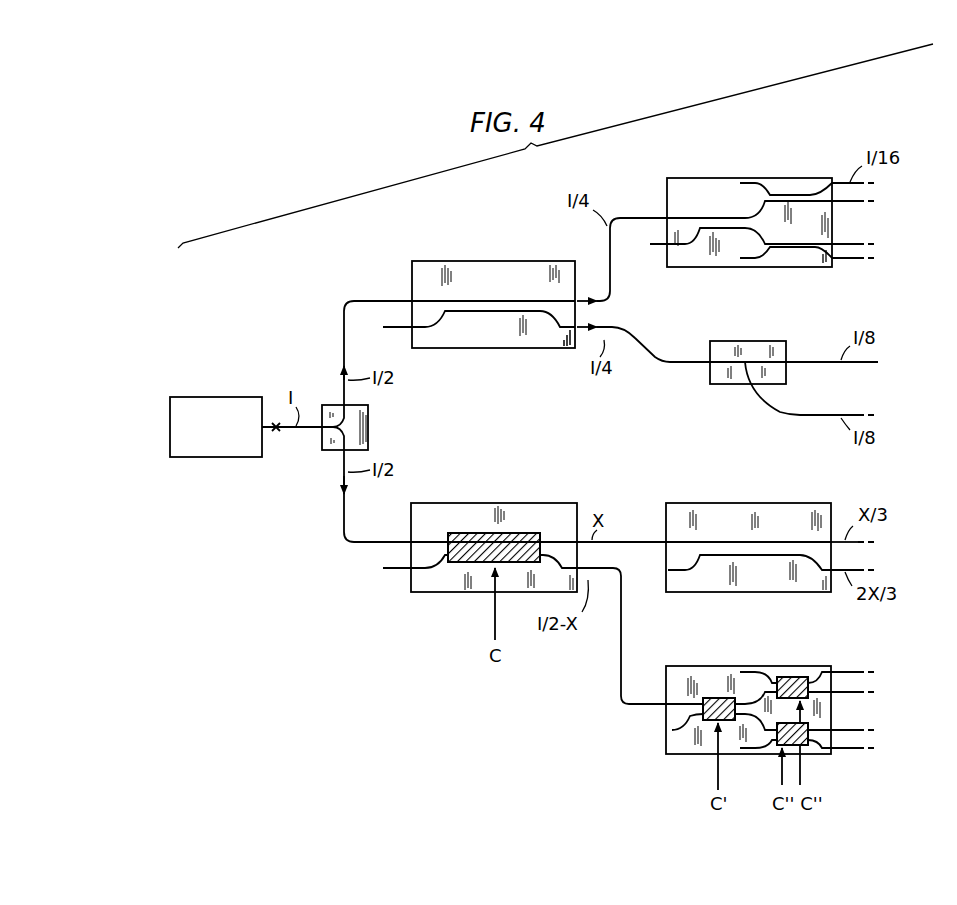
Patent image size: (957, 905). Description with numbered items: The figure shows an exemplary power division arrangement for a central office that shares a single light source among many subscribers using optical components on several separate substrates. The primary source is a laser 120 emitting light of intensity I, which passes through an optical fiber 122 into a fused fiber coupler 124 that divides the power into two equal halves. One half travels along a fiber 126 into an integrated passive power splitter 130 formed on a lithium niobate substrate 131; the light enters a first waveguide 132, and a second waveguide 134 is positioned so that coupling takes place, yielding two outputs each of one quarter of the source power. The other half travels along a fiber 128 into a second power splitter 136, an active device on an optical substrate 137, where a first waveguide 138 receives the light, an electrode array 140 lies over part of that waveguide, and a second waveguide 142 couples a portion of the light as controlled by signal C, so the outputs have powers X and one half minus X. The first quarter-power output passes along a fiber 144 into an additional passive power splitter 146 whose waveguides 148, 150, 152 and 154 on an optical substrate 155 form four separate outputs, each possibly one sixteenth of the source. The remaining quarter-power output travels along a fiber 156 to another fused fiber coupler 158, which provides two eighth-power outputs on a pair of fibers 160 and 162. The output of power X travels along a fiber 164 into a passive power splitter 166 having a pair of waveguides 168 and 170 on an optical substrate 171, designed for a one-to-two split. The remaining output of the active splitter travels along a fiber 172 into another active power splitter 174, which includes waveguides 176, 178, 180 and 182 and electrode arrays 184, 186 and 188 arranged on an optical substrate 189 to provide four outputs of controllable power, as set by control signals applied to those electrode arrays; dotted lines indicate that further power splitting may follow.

The laser 120 is at (262, 397).
The optical fiber 122 is at (305, 430).
The fused fiber coupler 124 is at (370, 427).
The fiber 126 is at (341, 301).
The fiber 128 is at (342, 546).
The integrated power splitter 130 is at (446, 261).
The lithium niobate substrate 131 is at (533, 268).
The first waveguide 132 is at (462, 300).
The second waveguide 134 is at (445, 334).
The second power splitter 136 is at (458, 503).
The optical substrate 137 is at (530, 512).
The first waveguide 138 is at (420, 538).
The electrode array 140 is at (530, 533).
The second waveguide 142 is at (430, 590).
The fiber 144 is at (632, 213).
The passive power splitter 146 is at (716, 177).
The waveguide 148 is at (680, 215).
The waveguide 150 is at (680, 262).
The waveguide 152 is at (762, 178).
The waveguide 154 is at (762, 266).
The optical substrate 155 is at (812, 182).
The fiber 156 is at (656, 360).
The fused fiber coupler 158 is at (758, 346).
The fiber 160 is at (830, 364).
The fiber 162 is at (776, 415).
The fiber 164 is at (628, 540).
The passive power splitter 166 is at (697, 503).
The waveguide 168 is at (697, 540).
The waveguide 170 is at (688, 576).
The optical substrate 171 is at (790, 515).
The fiber 172 is at (613, 656).
The active power splitter 174 is at (699, 666).
The waveguide 176 is at (672, 696).
The waveguide 178 is at (668, 743).
The waveguide 180 is at (765, 670).
The waveguide 182 is at (752, 754).
The electrode array 184 is at (730, 673).
The electrode array 186 is at (805, 680).
The electrode array 188 is at (818, 748).
The optical substrate 189 is at (834, 672).